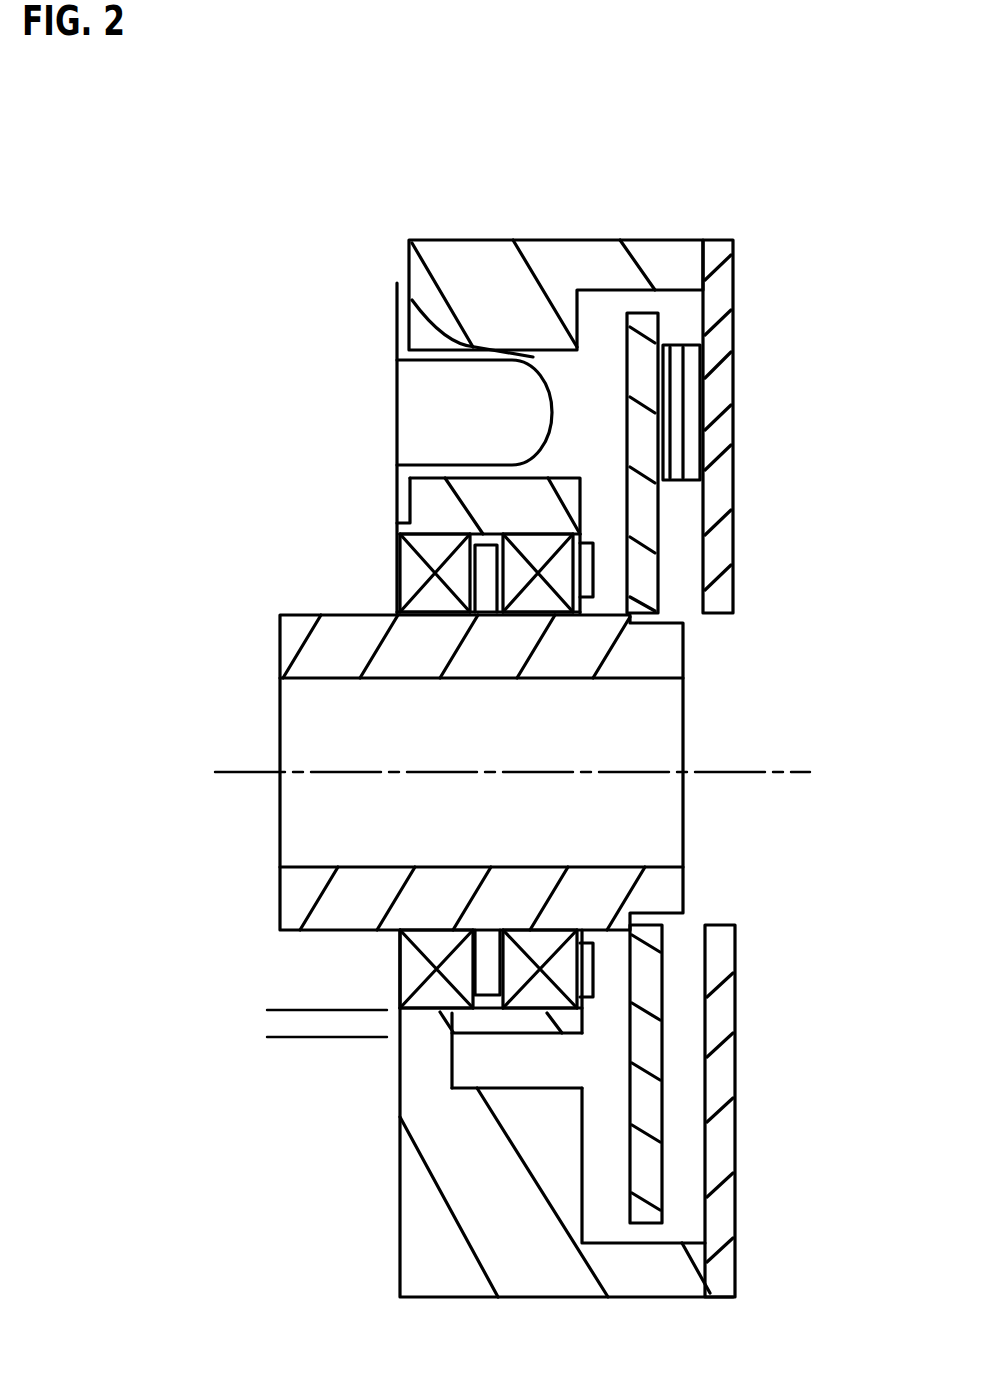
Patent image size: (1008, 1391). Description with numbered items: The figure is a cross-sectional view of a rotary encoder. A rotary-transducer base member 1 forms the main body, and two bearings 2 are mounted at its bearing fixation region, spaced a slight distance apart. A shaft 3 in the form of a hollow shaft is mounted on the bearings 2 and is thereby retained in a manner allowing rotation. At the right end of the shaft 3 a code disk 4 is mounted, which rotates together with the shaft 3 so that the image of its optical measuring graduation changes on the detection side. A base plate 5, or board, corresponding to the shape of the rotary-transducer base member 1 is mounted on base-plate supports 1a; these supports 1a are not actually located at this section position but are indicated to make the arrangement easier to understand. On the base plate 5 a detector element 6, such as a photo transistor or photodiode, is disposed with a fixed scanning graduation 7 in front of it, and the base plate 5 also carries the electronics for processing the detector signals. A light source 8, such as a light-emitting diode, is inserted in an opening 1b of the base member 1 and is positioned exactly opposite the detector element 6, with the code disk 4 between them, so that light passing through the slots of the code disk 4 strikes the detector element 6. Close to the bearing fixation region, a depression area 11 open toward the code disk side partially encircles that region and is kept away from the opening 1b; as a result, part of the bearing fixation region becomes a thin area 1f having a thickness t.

The rotary-transducer base member 1 is at (418, 1188).
The base-plate supports 1a is at (700, 270).
The opening 1b is at (397, 283).
The thin area 1f is at (597, 990).
The bearings 2 is at (407, 973).
The shaft 3 is at (315, 676).
The code disk 4 is at (647, 1027).
The base plate 5 is at (735, 1160).
The detector element 6 is at (700, 380).
The fixed scanning graduation 7 is at (683, 462).
The light source 8 is at (430, 420).
The depression area 11 is at (483, 1065).
The thickness t is at (282, 973).